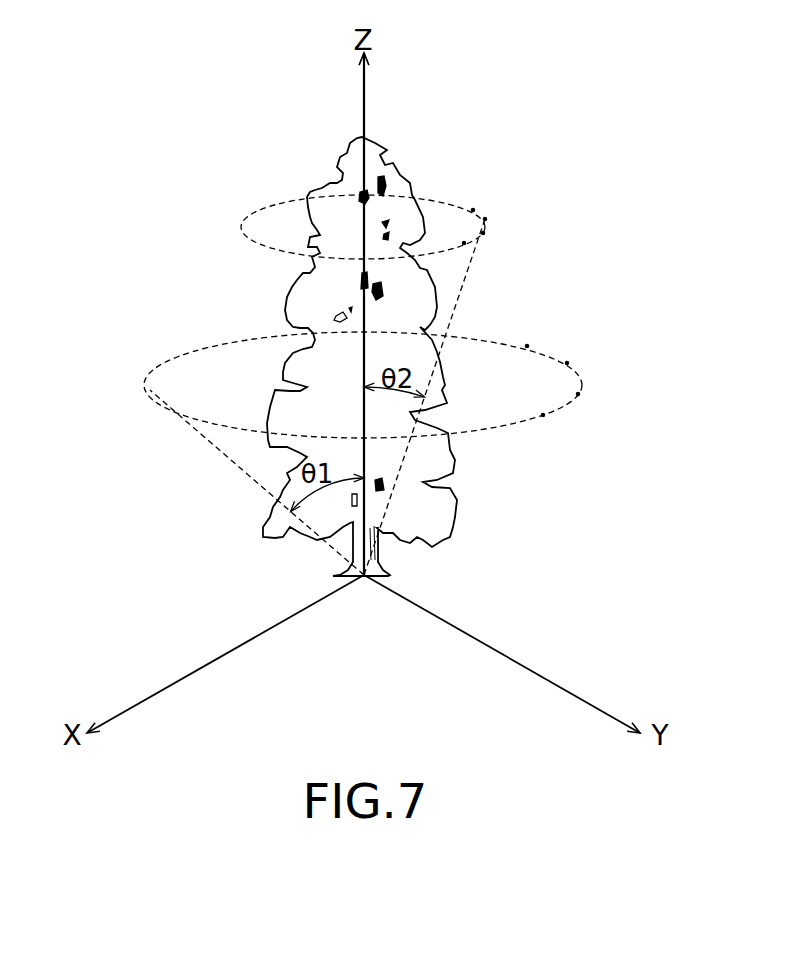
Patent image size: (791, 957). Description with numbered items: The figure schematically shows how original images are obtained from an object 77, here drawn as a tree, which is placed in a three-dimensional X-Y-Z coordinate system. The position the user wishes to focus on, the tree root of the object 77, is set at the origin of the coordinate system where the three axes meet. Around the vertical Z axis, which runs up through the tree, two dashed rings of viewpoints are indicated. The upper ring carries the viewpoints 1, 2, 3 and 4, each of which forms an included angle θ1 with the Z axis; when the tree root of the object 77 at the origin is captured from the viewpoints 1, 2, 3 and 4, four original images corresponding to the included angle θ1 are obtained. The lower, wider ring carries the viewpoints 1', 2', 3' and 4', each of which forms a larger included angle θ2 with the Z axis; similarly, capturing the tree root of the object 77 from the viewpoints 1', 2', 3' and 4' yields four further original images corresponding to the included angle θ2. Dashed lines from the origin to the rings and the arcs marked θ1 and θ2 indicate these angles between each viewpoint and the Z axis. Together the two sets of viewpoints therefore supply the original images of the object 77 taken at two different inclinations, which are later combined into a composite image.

The object 77 is at (392, 163).
The viewpoint 1 is at (499, 184).
The viewpoint 2 is at (521, 215).
The viewpoint 3 is at (506, 266).
The viewpoint 4 is at (487, 277).
The viewpoint 1' is at (557, 319).
The viewpoint 2' is at (598, 336).
The viewpoint 3' is at (603, 429).
The viewpoint 4' is at (567, 449).